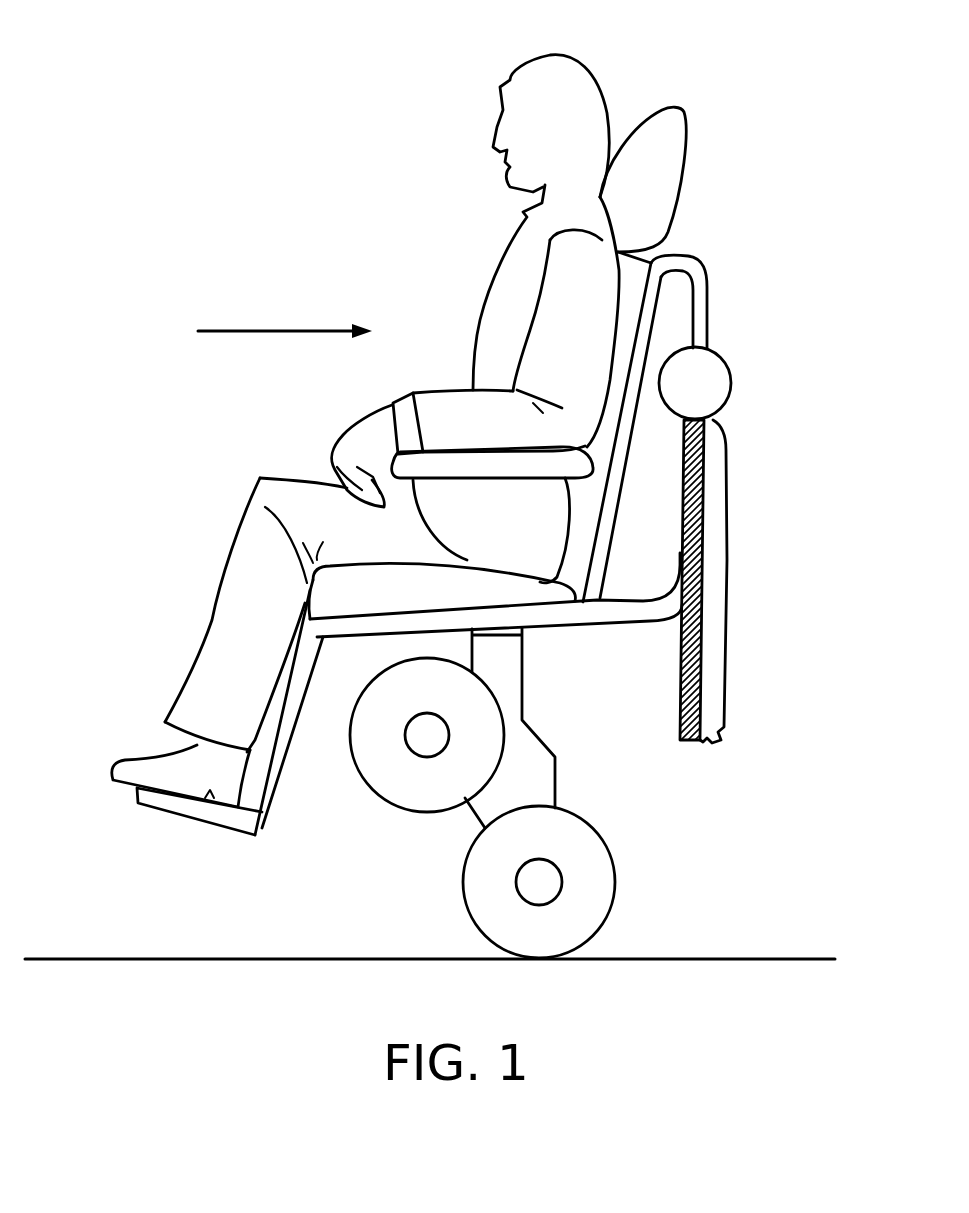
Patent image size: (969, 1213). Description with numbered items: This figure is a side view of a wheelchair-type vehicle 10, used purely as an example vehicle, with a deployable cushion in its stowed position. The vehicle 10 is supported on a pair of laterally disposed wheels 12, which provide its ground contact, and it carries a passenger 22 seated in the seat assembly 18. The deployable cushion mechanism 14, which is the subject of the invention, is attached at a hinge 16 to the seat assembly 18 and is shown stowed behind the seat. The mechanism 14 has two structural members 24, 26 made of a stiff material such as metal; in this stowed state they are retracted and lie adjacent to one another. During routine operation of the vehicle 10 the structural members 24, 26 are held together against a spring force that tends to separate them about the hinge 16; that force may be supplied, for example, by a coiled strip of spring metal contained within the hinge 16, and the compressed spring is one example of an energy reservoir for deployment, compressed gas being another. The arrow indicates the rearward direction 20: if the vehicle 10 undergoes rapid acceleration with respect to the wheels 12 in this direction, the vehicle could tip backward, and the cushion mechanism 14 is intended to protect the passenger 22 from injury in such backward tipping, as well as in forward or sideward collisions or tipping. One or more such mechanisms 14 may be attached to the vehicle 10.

The wheelchair-type vehicle 10 is at (661, 50).
The wheels 12 is at (615, 885).
The deployable cushion mechanism 14 is at (744, 592).
The hinge 16 is at (733, 383).
The seat assembly 18 is at (683, 252).
The rearward direction 20 is at (262, 330).
The passenger 22 is at (500, 110).
The structural member 24 is at (680, 688).
The structural member 26 is at (725, 688).